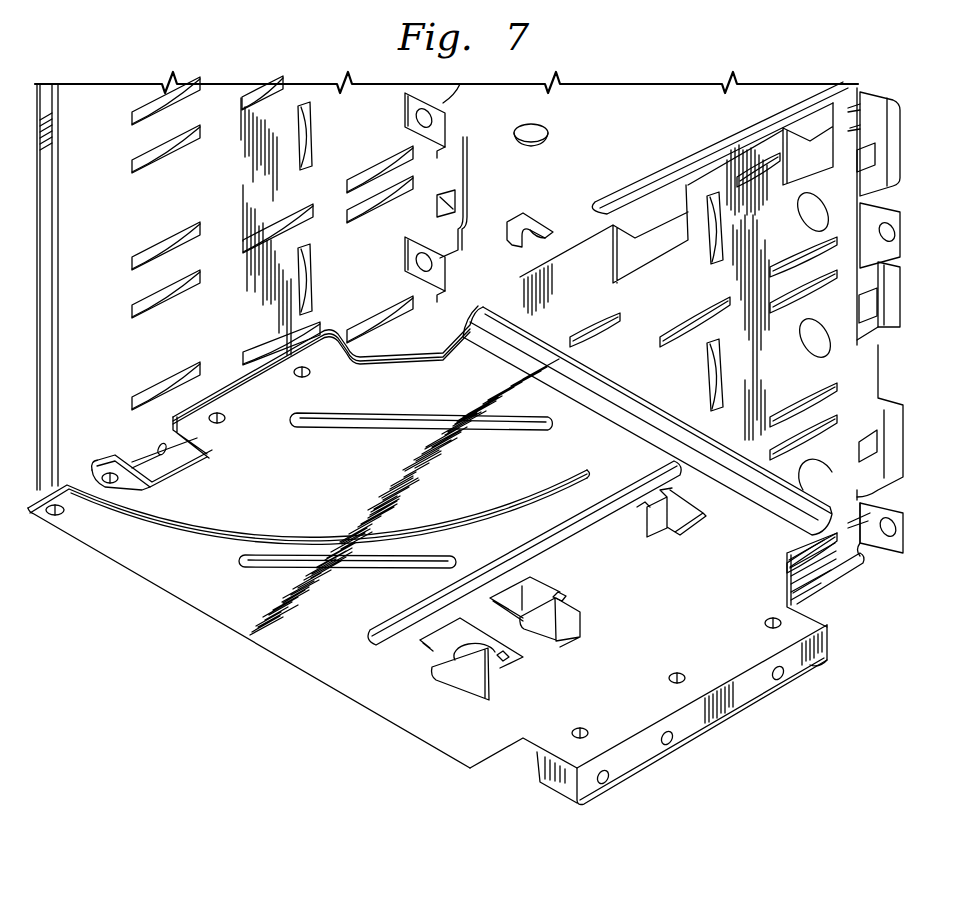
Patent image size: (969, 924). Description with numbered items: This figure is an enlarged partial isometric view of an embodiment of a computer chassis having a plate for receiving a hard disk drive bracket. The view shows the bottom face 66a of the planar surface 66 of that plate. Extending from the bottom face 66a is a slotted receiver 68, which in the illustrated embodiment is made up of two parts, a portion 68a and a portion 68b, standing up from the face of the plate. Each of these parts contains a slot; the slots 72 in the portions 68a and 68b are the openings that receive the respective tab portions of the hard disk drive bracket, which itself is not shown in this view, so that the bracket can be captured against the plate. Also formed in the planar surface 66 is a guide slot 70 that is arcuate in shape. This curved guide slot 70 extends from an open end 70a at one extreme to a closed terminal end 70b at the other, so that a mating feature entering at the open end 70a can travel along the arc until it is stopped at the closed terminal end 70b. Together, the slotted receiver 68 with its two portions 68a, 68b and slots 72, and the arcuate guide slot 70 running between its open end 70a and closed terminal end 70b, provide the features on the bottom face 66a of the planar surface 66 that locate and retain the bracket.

The planar surface 66 is at (40, 518).
The bottom face 66a is at (172, 596).
The slotted receiver 68 is at (583, 670).
The portion 68a is at (587, 612).
The portion 68b is at (467, 680).
The guide slot 70 is at (222, 545).
The open end 70a is at (80, 475).
The closed terminal end 70b is at (585, 470).
The slots 72 is at (556, 597).